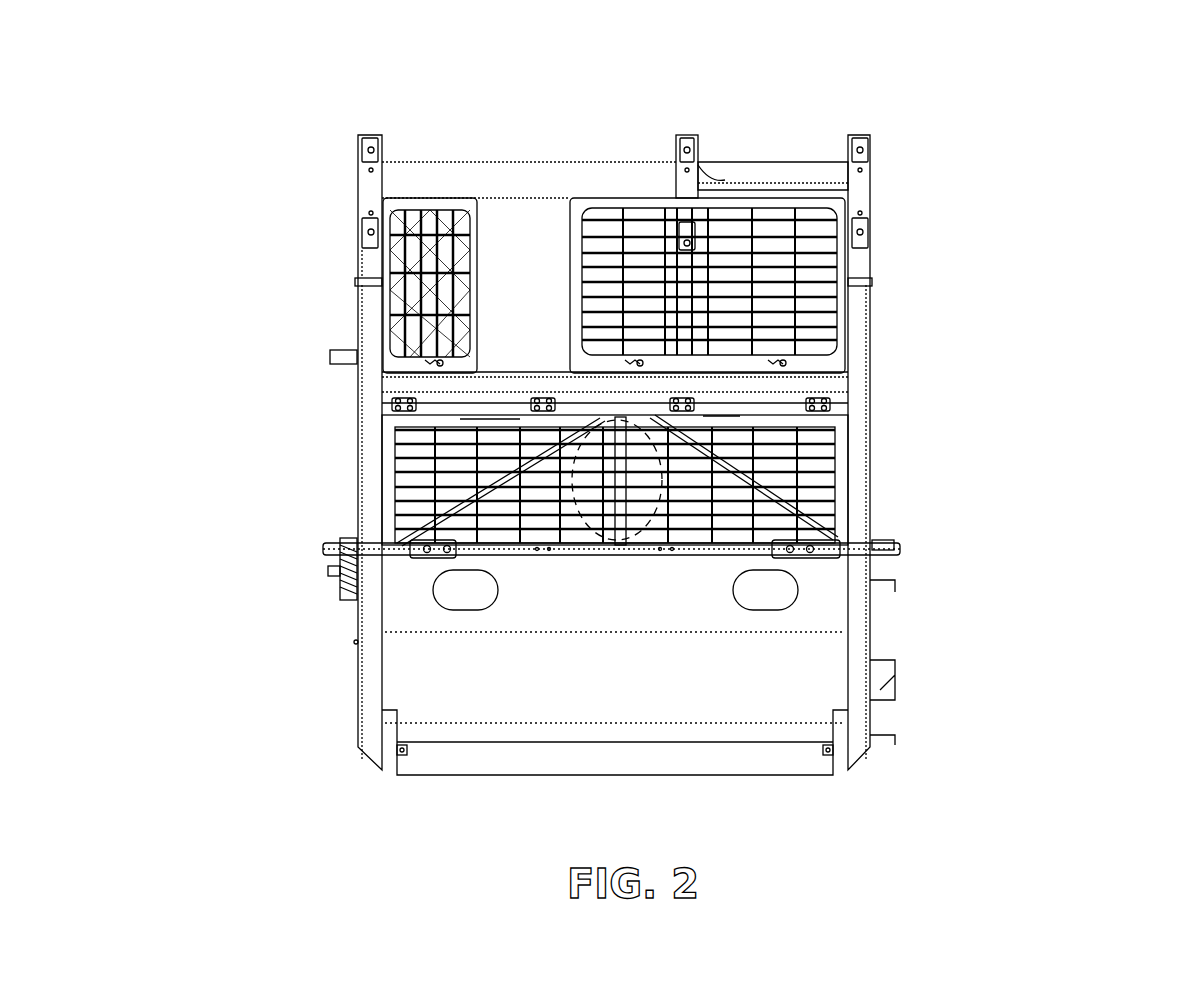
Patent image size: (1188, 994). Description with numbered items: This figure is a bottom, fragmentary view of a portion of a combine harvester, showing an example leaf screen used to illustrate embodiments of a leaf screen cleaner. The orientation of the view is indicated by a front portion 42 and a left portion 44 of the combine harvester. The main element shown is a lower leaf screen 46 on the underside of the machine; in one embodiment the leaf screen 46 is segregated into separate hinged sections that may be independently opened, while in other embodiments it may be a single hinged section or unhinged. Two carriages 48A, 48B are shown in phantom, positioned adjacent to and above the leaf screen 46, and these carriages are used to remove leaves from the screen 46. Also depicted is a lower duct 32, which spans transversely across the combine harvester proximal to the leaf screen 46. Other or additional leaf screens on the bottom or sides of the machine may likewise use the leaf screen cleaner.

The front portion 42 is at (618, 128).
The left portion 44 is at (1030, 442).
The lower leaf screen 46 is at (827, 467).
The carriage 48A is at (717, 420).
The carriage 48B is at (520, 442).
The lower duct 32 is at (611, 656).